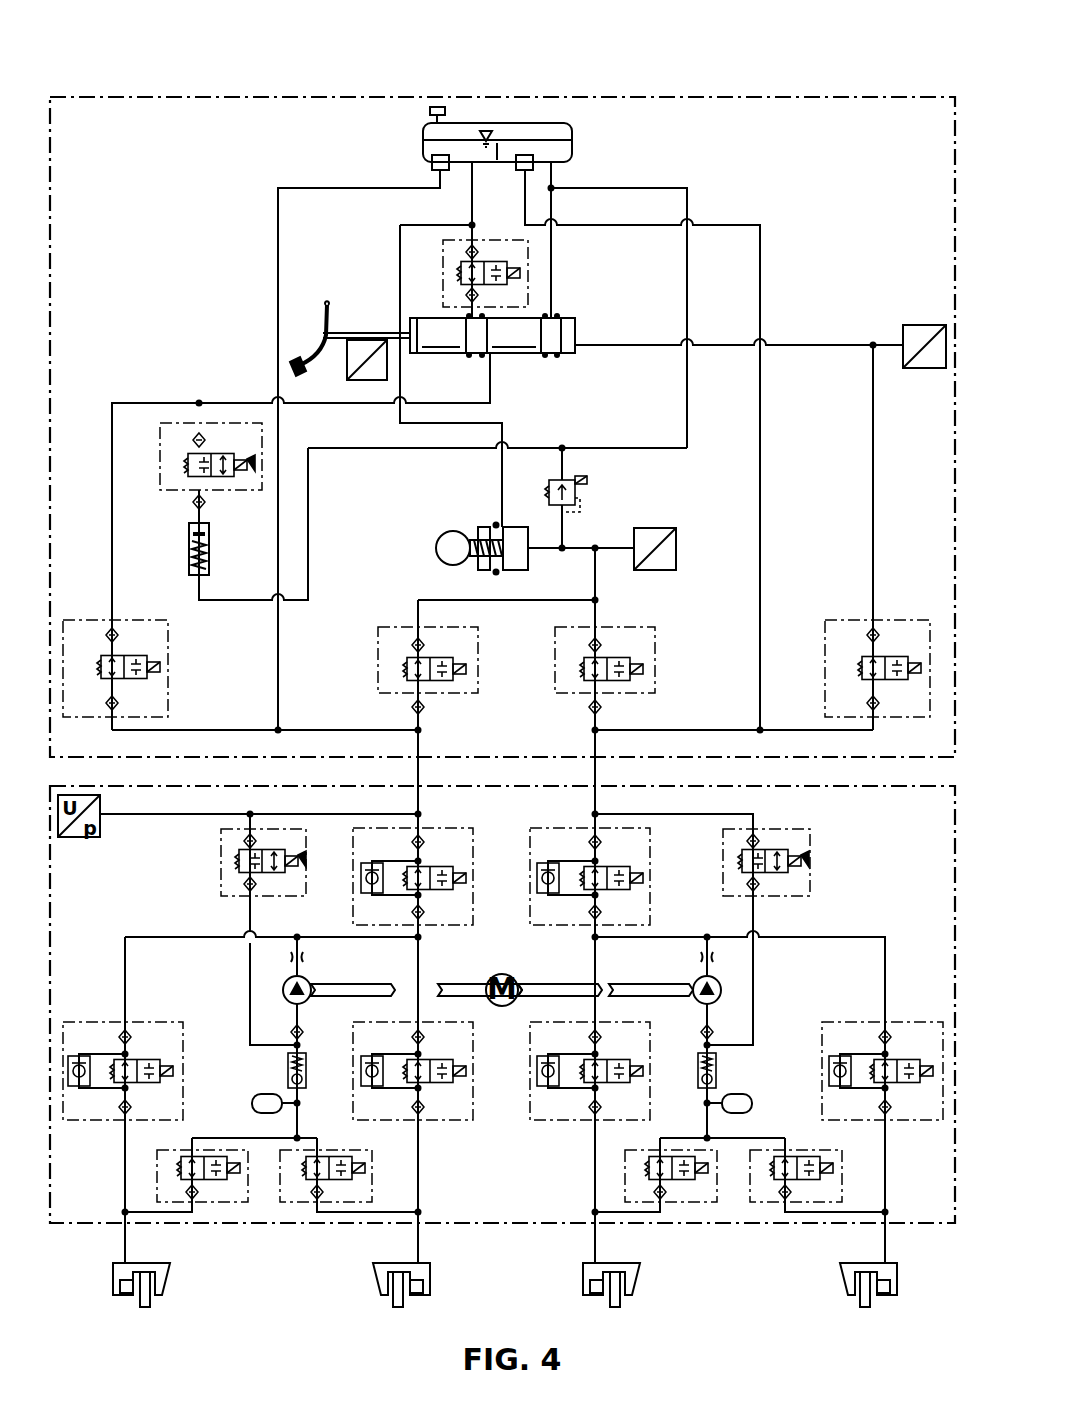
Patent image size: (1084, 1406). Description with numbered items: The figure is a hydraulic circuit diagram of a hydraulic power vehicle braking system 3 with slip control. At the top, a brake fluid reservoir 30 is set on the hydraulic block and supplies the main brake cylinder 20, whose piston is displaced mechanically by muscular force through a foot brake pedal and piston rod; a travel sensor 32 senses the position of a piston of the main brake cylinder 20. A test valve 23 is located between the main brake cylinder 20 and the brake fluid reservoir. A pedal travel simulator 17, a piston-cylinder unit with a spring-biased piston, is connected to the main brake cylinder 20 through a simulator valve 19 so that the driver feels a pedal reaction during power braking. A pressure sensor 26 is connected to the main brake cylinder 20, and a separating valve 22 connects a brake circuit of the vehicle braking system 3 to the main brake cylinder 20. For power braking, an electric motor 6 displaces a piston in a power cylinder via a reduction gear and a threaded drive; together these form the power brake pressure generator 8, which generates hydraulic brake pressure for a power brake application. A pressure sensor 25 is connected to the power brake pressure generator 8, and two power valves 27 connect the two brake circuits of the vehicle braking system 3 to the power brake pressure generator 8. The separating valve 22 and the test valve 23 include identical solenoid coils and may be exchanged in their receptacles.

The hydraulic power vehicle braking system 3 is at (770, 70).
The brake fluid reservoir 30 is at (510, 122).
The test valve 23 is at (487, 262).
The main brake cylinder 20 is at (575, 355).
The travel sensor 32 is at (338, 382).
The simulator valve 19 is at (197, 452).
The pedal travel simulator 17 is at (189, 548).
The power brake pressure generator 8 is at (446, 505).
The electric motor 6 is at (436, 548).
The pressure sensor 25 is at (678, 548).
The pressure sensor 26 is at (923, 369).
The separating valve 22 is at (868, 680).
The power valves 27 is at (450, 684).